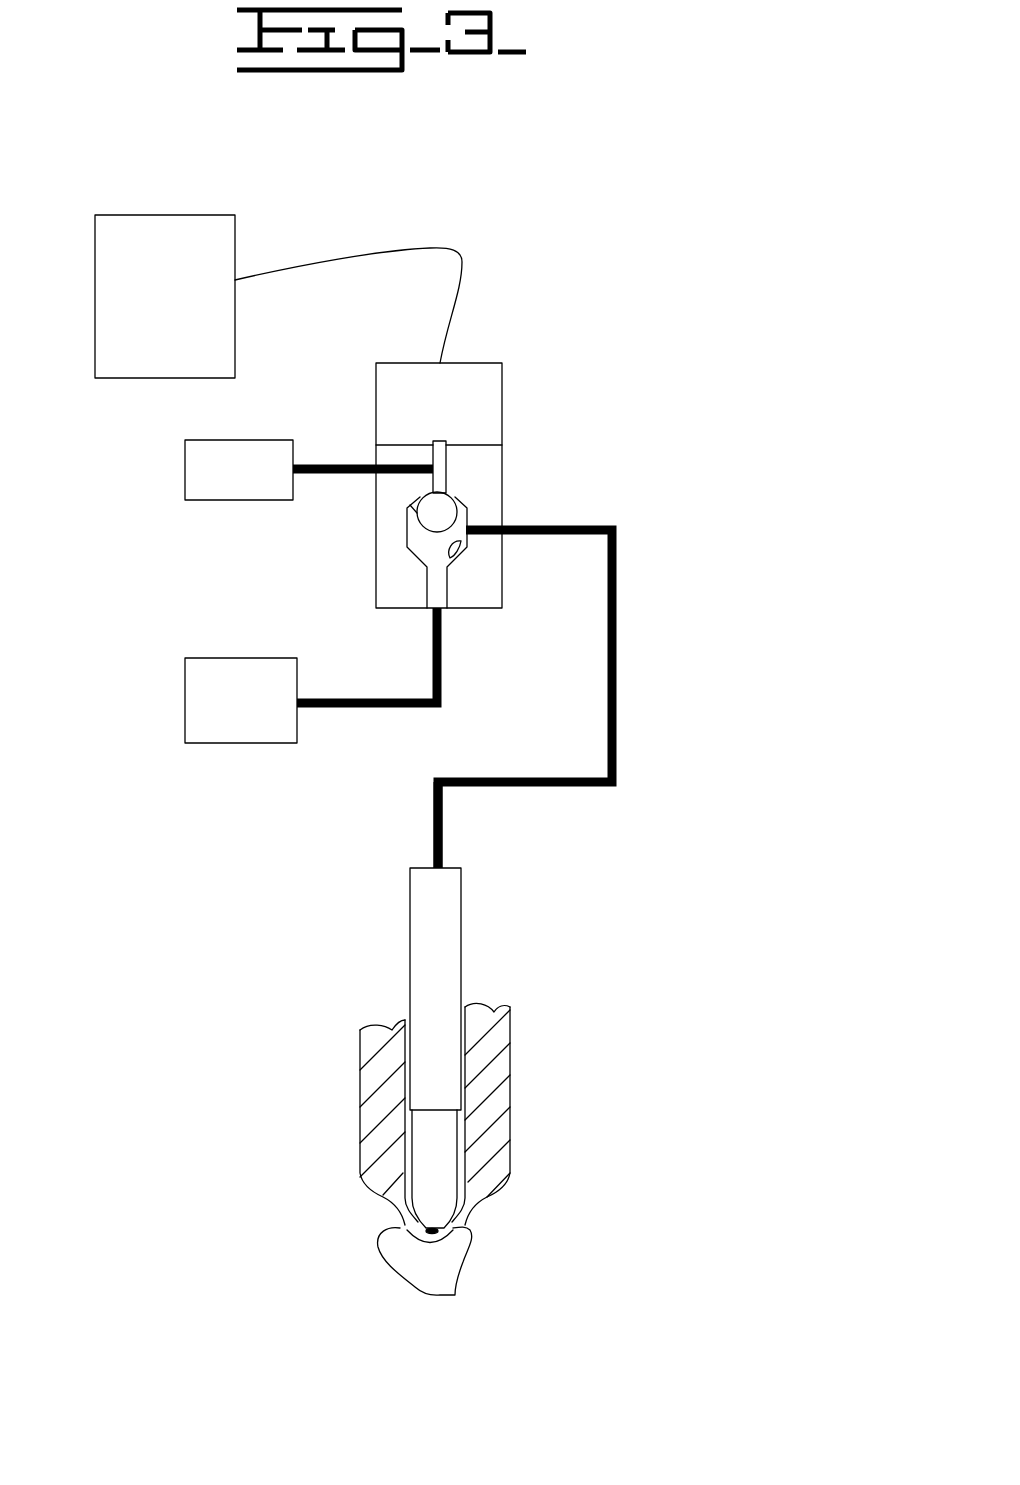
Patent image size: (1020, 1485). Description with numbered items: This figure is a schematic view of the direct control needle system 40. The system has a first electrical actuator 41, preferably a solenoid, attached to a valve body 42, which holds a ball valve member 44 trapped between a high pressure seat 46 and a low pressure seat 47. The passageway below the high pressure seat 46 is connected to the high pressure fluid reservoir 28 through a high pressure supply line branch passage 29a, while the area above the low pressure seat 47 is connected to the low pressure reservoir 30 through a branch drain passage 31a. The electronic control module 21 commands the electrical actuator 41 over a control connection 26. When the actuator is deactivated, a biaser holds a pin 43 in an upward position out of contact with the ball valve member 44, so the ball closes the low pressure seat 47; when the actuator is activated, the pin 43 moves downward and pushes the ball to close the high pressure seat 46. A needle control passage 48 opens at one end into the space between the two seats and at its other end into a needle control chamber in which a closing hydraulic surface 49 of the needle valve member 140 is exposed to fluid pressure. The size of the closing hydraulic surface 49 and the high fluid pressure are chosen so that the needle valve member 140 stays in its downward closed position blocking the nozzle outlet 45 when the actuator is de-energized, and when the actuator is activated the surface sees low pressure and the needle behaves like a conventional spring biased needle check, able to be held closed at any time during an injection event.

The electronic control module 21 is at (235, 240).
The control signal line 26 is at (443, 245).
The high pressure fluid reservoir 28 is at (185, 708).
The high pressure supply line branch passage 29a is at (362, 707).
The low pressure reservoir 30 is at (242, 500).
The branch drain passage 31a is at (337, 465).
The direct control needle system 40 is at (632, 506).
The first electrical actuator 41 is at (502, 388).
The valve body 42 is at (376, 575).
The pin 43 is at (447, 465).
The ball valve member 44 is at (467, 522).
The nozzle outlet 45 is at (455, 1295).
The high pressure seat 46 is at (461, 544).
The low pressure seat 47 is at (417, 513).
The needle control passage 48 is at (617, 567).
The closing hydraulic surface 49 is at (445, 867).
The needle valve member 140 is at (462, 928).